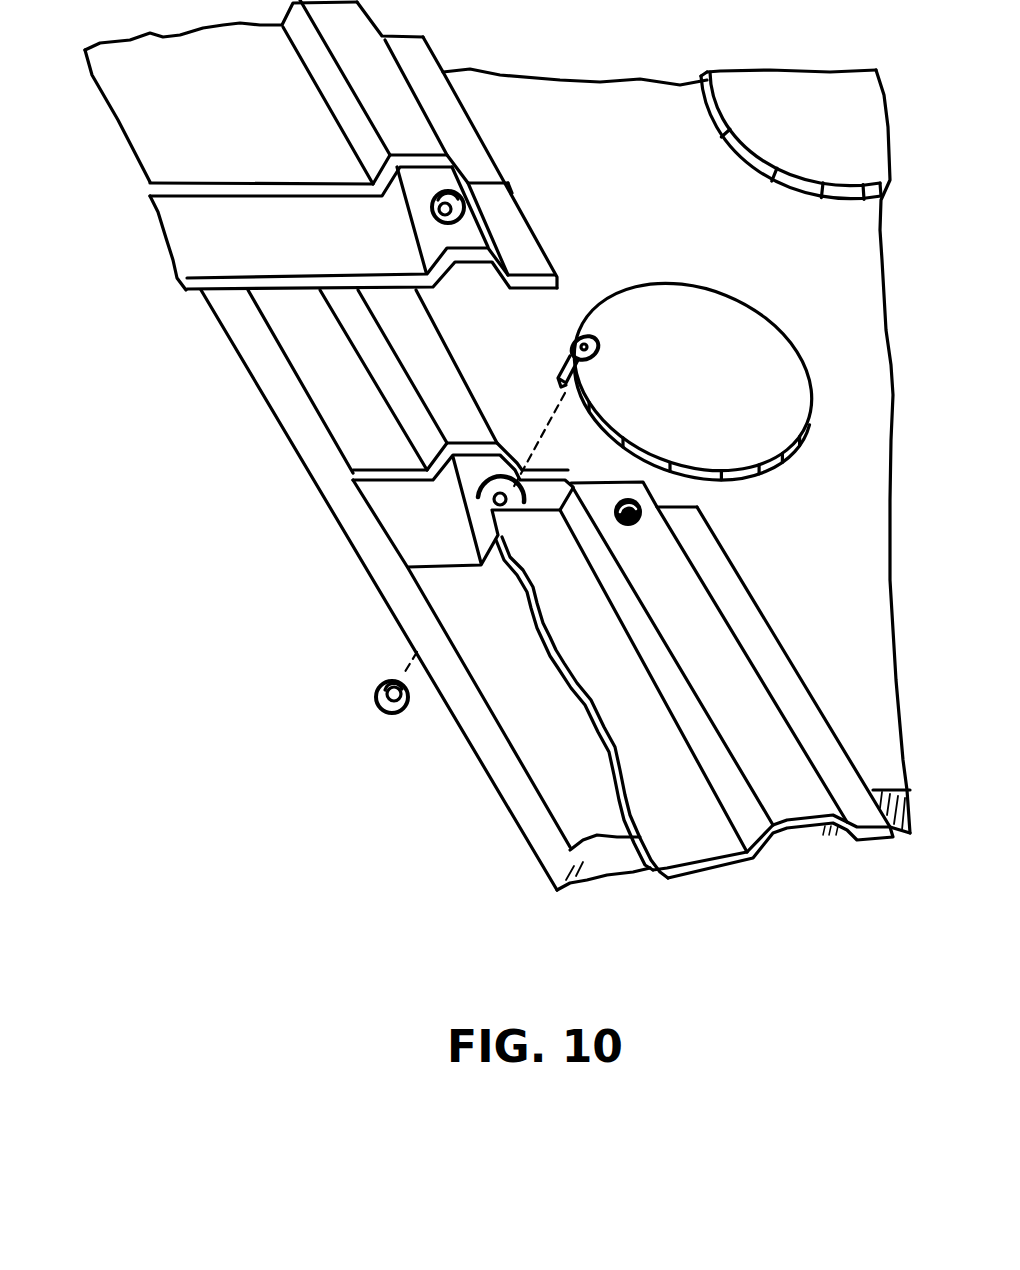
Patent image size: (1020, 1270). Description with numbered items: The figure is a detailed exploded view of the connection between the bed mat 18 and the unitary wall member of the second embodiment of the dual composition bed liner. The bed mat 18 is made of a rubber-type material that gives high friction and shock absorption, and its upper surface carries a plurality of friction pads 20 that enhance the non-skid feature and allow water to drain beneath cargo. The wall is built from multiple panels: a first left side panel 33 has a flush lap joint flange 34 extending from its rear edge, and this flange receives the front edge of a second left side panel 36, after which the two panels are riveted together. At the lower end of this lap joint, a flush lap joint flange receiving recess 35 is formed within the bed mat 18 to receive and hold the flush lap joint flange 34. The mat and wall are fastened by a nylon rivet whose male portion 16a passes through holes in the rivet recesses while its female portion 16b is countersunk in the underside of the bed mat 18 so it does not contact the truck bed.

The bed mat 18 is at (676, 451).
The friction pads 20 is at (713, 287).
The first left side panel 33 is at (296, 92).
The flush lap joint flange 34 is at (353, 163).
The flush lap joint flange receiving recess 35 is at (425, 590).
The second left side panel 36 is at (694, 680).
The male portion of nylon rivet 16a is at (587, 335).
The female portion of nylon rivet 16b is at (388, 715).